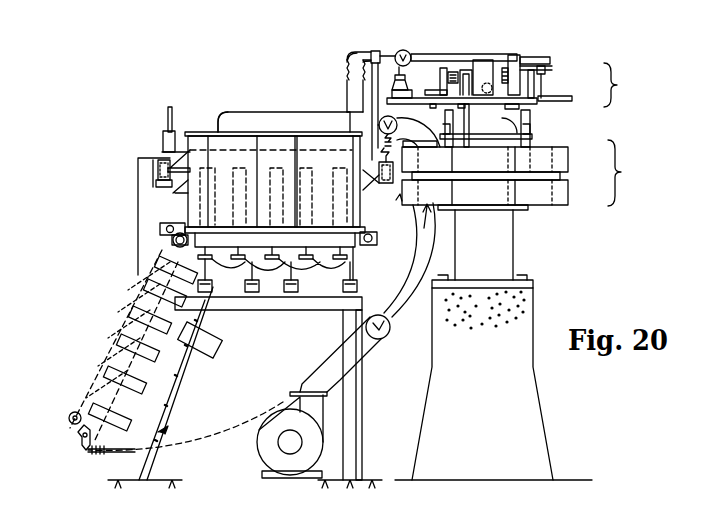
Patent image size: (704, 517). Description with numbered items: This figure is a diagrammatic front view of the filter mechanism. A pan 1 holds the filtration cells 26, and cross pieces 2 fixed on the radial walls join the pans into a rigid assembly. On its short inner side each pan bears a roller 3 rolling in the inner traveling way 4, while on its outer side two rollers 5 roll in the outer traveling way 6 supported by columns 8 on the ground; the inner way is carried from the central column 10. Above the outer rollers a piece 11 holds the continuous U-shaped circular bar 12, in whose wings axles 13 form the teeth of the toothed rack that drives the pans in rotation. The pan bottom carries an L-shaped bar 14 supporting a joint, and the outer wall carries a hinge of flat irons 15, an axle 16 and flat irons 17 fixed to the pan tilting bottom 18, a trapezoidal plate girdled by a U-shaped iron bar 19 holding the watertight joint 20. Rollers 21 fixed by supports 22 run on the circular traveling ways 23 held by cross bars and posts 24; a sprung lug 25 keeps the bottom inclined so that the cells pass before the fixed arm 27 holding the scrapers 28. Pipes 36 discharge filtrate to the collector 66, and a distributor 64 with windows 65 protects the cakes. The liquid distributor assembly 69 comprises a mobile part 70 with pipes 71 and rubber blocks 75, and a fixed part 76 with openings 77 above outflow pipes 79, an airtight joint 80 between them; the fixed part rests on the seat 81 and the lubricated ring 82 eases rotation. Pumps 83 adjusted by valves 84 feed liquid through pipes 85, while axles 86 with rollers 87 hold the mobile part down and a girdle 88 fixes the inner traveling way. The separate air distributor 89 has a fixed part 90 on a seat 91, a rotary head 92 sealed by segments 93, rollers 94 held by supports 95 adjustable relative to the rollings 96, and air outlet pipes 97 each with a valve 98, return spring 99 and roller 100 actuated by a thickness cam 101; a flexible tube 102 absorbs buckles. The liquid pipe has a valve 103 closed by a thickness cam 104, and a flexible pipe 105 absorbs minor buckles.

The pan 1 is at (283, 156).
The cross piece 2 is at (297, 142).
The roller 3 is at (378, 183).
The traveling way 4 is at (388, 184).
The rollers 5 is at (157, 171).
The outer traveling way 6 is at (156, 185).
The columns 8 is at (138, 212).
The central column 10 is at (505, 254).
The piece 11 is at (185, 131).
The U-shaped circular bar 12 is at (170, 110).
The axles 13 is at (163, 141).
The L-shaped bar 14 is at (363, 236).
The flat irons 15 is at (178, 223).
The axle 16 is at (172, 238).
The flat irons 17 is at (172, 245).
The pan tilting bottom 18 is at (104, 348).
The U-shaped iron bar 19 is at (69, 416).
The watertight joint 20 is at (72, 428).
The rollers 21 is at (358, 286).
The supports 22 is at (356, 262).
The traveling ways 23 is at (362, 298).
The cross bars and posts 24 is at (345, 320).
The sprung lug 25 is at (90, 452).
The filtration cells 26 is at (239, 152).
The fixed arm 27 is at (185, 399).
The scrapers 28 is at (203, 353).
The pipes 36 is at (250, 262).
The distributor 64 is at (224, 148).
The windows 65 is at (265, 150).
The collector 66 is at (305, 260).
The turntable assembly 69 is at (623, 173).
The mobile part 70 is at (565, 158).
The pipes 71 is at (428, 130).
The rubber block 75 is at (373, 51).
The fixed part 76 is at (566, 193).
The openings 77 is at (535, 196).
The pipes 79 is at (405, 299).
The airtight joint 80 is at (566, 176).
The seat 81 is at (466, 208).
The lubricated ring 82 is at (555, 150).
The pumps 83 is at (258, 435).
The valves 84 is at (380, 342).
The pipes 85 is at (318, 124).
The axles 86 is at (504, 121).
The rollers 87 is at (532, 142).
The girdle 88 is at (436, 238).
The air distributor 89 is at (619, 85).
The fixed part 90 is at (496, 62).
The seat 91 is at (548, 100).
The rotary head 92 is at (522, 60).
The segments 93 is at (553, 66).
The rollers 94 is at (535, 80).
The supports 95 is at (546, 97).
The rollings 96 is at (542, 85).
The air outlet pipes 97 is at (425, 55).
The valve 98 is at (405, 50).
The return spring 99 is at (380, 52).
The roller 100 is at (408, 82).
The thickness cam 101 is at (390, 86).
The flexible tube 102 is at (346, 80).
The valve 103 is at (384, 119).
The thickness cam 104 is at (415, 151).
The flexible pipe 105 is at (365, 122).